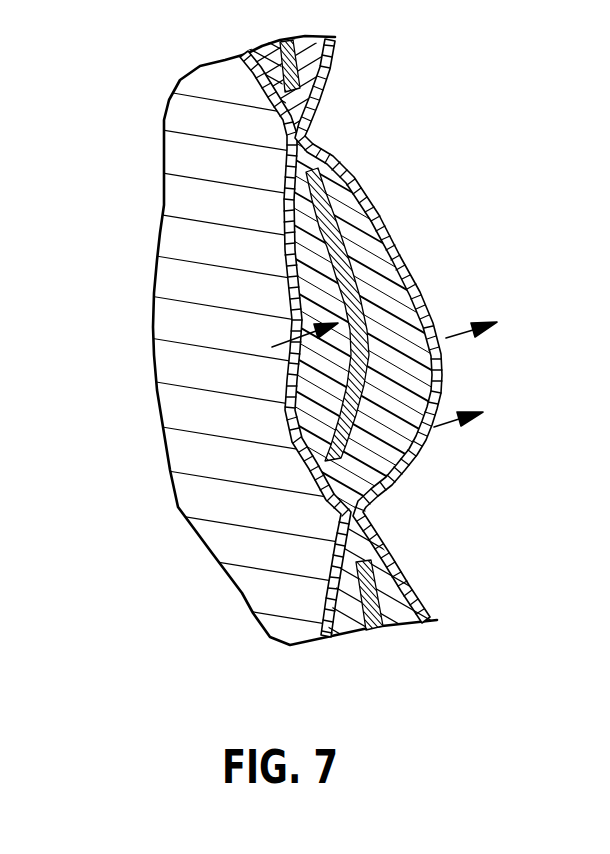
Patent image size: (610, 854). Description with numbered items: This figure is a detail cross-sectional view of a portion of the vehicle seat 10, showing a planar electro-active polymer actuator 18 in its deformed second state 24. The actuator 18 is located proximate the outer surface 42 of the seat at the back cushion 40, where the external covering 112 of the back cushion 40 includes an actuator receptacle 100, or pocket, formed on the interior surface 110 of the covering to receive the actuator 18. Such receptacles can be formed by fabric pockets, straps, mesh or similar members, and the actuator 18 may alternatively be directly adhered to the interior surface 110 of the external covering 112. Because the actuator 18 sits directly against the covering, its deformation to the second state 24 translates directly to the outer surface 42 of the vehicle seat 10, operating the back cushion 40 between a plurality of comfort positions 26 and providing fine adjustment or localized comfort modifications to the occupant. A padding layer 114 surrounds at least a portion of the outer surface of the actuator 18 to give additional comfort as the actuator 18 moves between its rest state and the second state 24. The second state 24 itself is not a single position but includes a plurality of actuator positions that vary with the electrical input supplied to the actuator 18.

The vehicle seat 10 is at (341, 346).
The planar electro-active polymer actuator 18 is at (323, 188).
The second state 24 is at (380, 324).
The comfort positions 26 is at (500, 343).
The back cushion 40 is at (193, 368).
The outer surface 42 is at (438, 368).
The actuator receptacle 100 is at (354, 238).
The interior surface 110 is at (405, 263).
The external covering 112 is at (407, 461).
The padding layer 114 is at (300, 260).